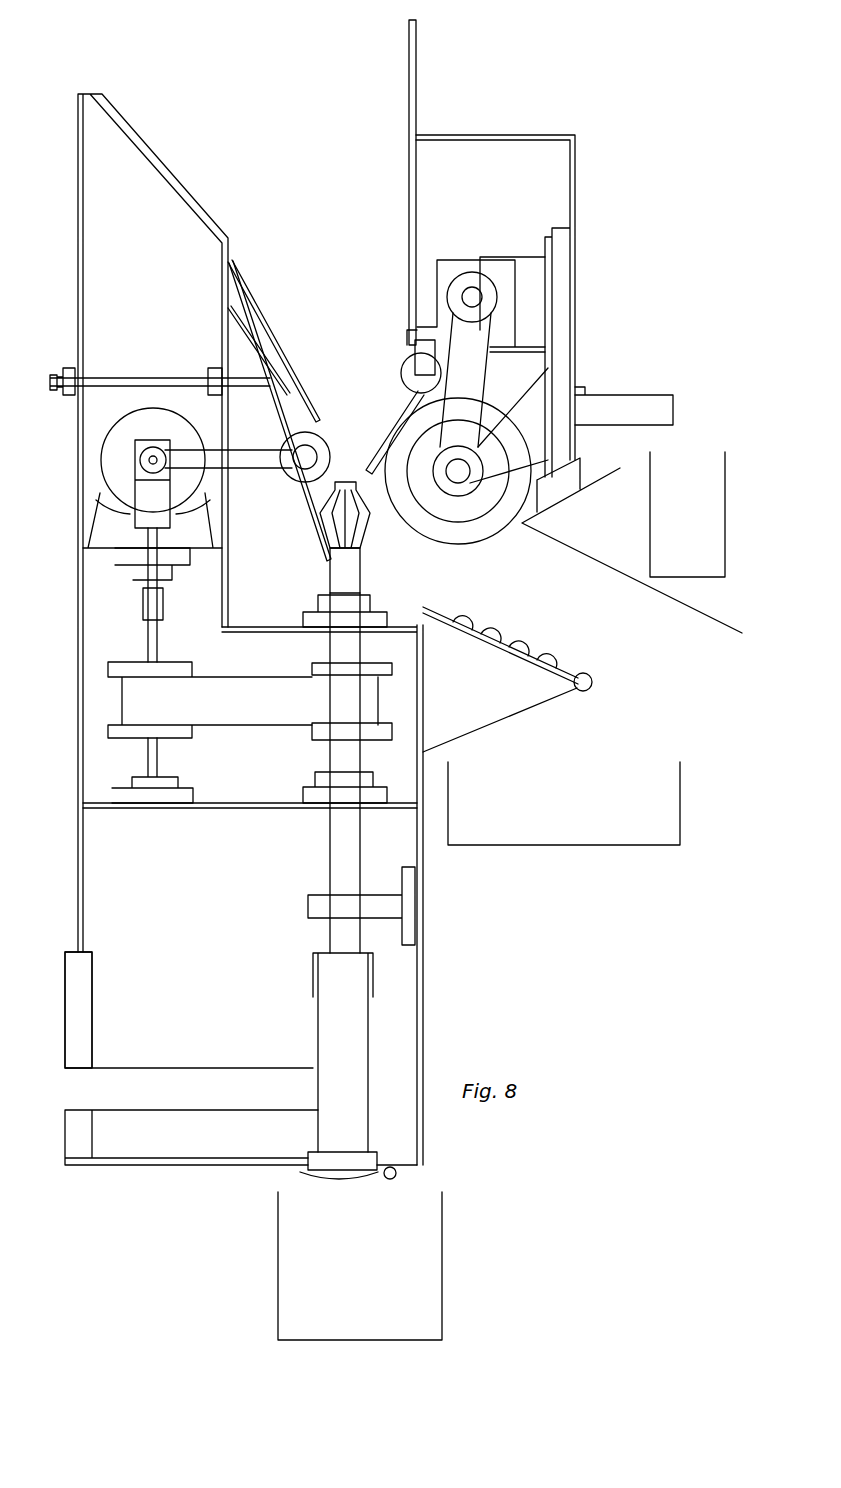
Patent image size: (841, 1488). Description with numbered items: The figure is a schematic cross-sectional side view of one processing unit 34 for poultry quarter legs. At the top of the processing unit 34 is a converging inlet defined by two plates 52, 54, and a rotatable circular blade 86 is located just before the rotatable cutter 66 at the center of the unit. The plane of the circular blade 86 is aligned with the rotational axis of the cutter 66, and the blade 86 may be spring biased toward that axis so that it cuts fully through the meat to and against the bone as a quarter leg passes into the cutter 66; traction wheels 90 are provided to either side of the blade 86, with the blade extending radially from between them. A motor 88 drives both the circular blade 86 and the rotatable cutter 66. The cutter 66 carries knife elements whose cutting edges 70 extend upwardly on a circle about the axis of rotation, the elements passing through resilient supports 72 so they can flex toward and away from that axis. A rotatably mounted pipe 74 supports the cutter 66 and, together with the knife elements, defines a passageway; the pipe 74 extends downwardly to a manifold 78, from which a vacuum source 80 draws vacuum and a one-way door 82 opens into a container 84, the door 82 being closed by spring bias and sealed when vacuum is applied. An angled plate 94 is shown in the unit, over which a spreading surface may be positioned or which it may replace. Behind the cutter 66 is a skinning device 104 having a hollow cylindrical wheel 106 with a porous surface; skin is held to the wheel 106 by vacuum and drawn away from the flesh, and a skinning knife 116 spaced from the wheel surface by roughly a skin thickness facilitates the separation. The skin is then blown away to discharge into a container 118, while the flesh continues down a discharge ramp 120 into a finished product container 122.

The processing unit 34 is at (62, 262).
The plate 52 is at (296, 393).
The plate 54 is at (392, 428).
The rotatable cutter 66 is at (380, 546).
The cutting edges 70 is at (345, 482).
The resilient supports 72 is at (322, 535).
The pipe 74 is at (330, 649).
The manifold 78 is at (313, 1022).
The vacuum source 80 is at (133, 1068).
The one-way door 82 is at (340, 1178).
The container 84 is at (278, 1250).
The rotatable circular blade 86 is at (316, 436).
The motor 88 is at (135, 412).
The traction wheels 90 is at (300, 488).
The angled plate 94 is at (302, 512).
The skinning device 104 is at (508, 548).
The hollow cylindrical wheel 106 is at (470, 545).
The skinning knife 116 is at (530, 532).
The container 118 is at (725, 518).
The discharge ramp 120 is at (558, 654).
The finished product container 122 is at (683, 796).